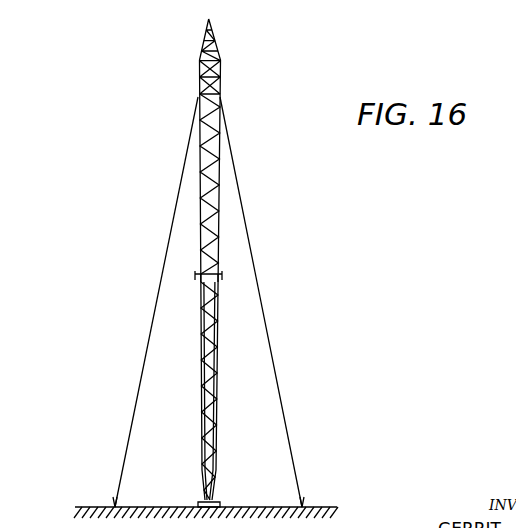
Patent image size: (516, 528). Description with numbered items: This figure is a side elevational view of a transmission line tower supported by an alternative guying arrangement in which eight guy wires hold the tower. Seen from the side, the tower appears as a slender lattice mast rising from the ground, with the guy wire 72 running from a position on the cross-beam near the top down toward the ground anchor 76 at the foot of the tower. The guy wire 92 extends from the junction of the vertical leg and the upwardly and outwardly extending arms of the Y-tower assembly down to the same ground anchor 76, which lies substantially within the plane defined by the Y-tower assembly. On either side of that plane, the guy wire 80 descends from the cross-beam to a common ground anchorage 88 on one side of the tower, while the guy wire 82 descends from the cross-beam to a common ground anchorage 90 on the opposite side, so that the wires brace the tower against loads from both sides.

The guy wire 72 is at (205, 153).
The ground anchor 76 is at (200, 503).
The guy wire 80 is at (173, 218).
The guy wire 82 is at (246, 225).
The ground anchorage 88 is at (115, 505).
The ground anchorage 90 is at (303, 505).
The guy wire 92 is at (203, 386).